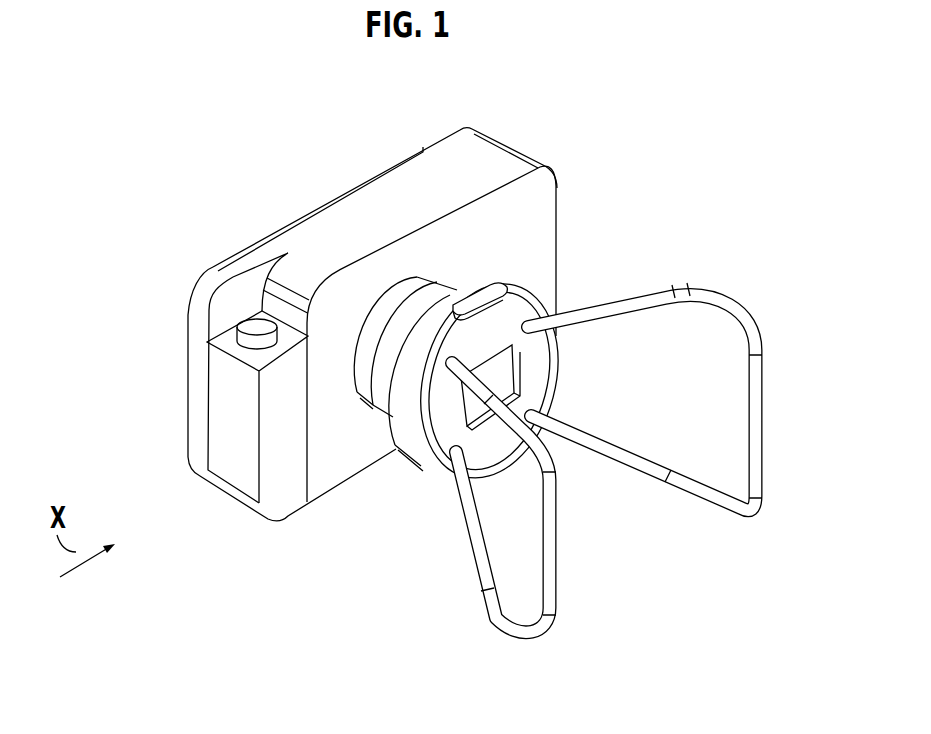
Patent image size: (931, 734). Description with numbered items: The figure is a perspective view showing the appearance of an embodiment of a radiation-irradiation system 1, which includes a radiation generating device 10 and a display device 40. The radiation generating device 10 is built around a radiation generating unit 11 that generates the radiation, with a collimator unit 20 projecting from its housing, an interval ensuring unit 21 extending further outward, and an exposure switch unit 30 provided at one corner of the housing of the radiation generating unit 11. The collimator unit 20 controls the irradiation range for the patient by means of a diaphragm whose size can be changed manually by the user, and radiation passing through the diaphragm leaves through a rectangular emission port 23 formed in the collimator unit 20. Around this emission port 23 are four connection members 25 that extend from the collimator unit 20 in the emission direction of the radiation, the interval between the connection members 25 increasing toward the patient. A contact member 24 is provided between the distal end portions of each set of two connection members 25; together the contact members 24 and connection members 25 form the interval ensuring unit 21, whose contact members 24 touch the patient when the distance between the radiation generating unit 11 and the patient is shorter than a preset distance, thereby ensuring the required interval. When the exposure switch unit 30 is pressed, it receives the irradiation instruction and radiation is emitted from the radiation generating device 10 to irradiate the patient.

The radiation-irradiation system 1 is at (94, 147).
The radiation generating device 10 is at (353, 570).
The radiation generating unit 11 is at (477, 160).
The display device 40 is at (287, 225).
The exposure switch unit 30 is at (253, 318).
The collimator unit 20 is at (512, 282).
The emission port 23 is at (540, 382).
The interval ensuring unit 21 is at (593, 614).
The contact member 24 is at (759, 424).
The connection member 25 is at (663, 292).